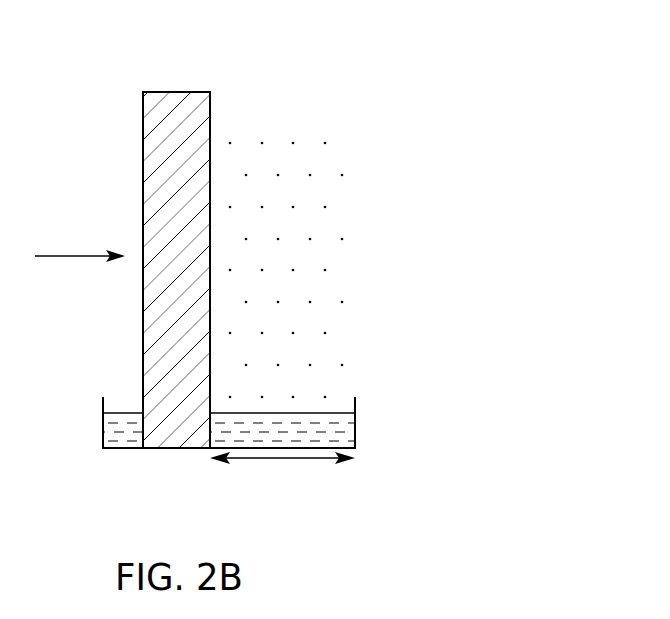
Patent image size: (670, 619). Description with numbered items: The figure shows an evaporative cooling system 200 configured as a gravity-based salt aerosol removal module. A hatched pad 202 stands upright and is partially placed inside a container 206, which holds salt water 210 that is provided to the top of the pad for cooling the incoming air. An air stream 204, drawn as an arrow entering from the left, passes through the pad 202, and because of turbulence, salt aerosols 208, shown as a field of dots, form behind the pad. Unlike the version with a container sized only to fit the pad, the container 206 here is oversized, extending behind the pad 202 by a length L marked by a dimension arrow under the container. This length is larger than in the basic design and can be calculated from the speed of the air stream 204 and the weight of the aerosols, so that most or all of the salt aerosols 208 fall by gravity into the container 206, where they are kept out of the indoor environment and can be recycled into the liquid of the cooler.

The evaporative cooling system 200 is at (508, 38).
The pad 202 is at (143, 122).
The air stream 204 is at (68, 255).
The container 206 is at (357, 437).
The salt aerosols 208 is at (326, 145).
The salt water 210 is at (293, 440).
The length L is at (290, 462).